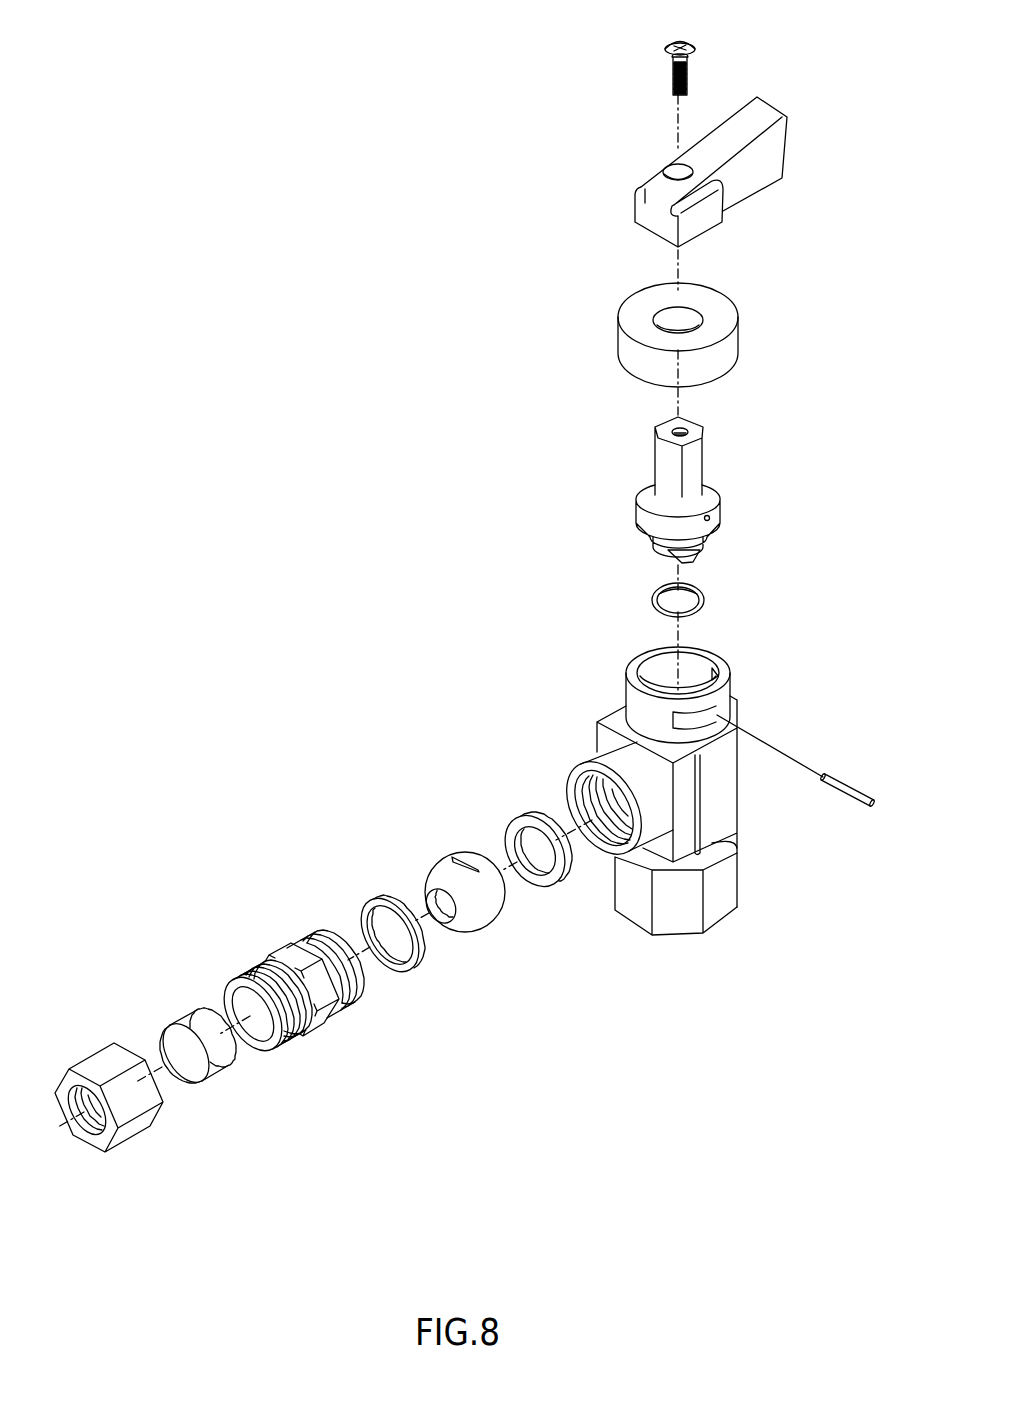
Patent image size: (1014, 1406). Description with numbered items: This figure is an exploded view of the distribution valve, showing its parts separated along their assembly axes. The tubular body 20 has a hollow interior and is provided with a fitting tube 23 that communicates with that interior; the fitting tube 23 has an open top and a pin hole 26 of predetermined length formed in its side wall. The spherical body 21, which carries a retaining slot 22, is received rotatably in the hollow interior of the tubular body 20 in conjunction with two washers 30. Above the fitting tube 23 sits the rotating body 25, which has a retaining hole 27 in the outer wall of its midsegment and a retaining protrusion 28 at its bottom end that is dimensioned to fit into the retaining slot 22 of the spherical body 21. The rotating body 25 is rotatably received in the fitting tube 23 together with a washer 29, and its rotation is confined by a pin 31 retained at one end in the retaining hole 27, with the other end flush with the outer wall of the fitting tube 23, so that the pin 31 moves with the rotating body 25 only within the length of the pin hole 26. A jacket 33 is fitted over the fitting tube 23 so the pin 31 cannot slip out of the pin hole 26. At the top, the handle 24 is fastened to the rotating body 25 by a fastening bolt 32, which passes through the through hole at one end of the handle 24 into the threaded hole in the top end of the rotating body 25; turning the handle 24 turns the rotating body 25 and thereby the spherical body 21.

The tubular body 20 is at (670, 790).
The spherical body 21 is at (462, 887).
The retaining slot 22 is at (465, 852).
The fitting tube 23 is at (630, 702).
The handle 24 is at (757, 110).
The rotating body 25 is at (668, 492).
The pin hole 26 is at (730, 702).
The retaining hole 27 is at (710, 518).
The retaining protrusion 28 is at (699, 555).
The washer 29 is at (707, 598).
The washers 30 is at (547, 887).
The pin 31 is at (847, 785).
The fastening bolt 32 is at (692, 43).
The jacket 33 is at (733, 312).